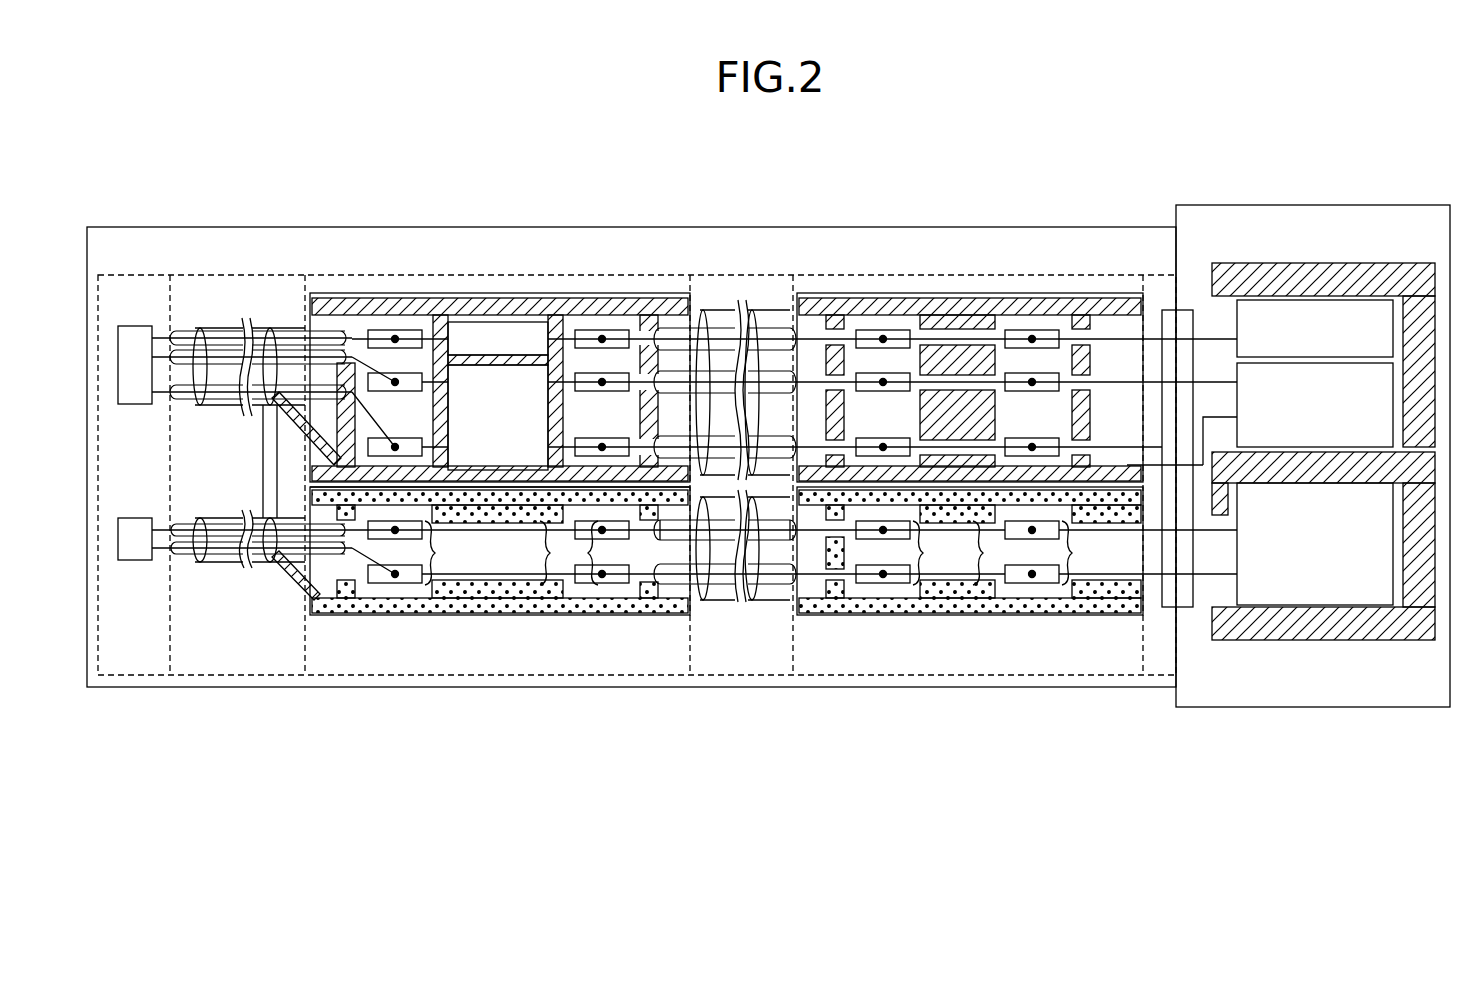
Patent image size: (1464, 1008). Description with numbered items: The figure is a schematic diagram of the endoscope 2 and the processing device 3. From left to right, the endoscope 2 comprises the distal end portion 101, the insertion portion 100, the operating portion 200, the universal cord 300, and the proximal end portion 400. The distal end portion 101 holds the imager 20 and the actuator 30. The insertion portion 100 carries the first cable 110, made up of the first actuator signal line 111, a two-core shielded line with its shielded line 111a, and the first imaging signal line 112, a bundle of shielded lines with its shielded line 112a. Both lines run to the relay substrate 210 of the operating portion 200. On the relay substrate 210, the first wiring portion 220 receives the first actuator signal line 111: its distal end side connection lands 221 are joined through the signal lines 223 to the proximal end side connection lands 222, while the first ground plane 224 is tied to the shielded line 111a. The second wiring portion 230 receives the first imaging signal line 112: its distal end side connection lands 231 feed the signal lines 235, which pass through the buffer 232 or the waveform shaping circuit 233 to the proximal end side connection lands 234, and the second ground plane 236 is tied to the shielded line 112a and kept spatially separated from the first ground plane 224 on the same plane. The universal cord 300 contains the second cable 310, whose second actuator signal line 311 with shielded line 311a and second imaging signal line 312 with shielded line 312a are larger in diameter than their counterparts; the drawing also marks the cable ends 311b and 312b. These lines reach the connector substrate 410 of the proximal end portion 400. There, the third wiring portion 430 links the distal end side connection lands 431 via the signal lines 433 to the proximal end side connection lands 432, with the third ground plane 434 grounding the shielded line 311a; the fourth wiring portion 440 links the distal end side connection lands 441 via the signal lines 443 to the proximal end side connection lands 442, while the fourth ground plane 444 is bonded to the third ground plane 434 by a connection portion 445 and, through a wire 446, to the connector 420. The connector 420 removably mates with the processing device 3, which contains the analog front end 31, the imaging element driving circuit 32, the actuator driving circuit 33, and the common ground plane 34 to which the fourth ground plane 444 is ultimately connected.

The endoscope 2 is at (958, 227).
The processing device 3 is at (1293, 205).
The imager 20 is at (138, 326).
The actuator 30 is at (138, 518).
The analog front end 31 is at (1254, 300).
The imaging element driving circuit 32 is at (1382, 363).
The actuator driving circuit 33 is at (1378, 605).
The common ground plane 34 is at (1295, 640).
The insertion portion 100 is at (232, 275).
The distal end portion 101 is at (140, 275).
The first cable 110 is at (272, 328).
The first actuator signal line 111 is at (216, 518).
The shielded line 111a is at (306, 582).
The first imaging signal line 112 is at (216, 326).
The shielded line 112a is at (305, 428).
The operating portion 200 is at (360, 275).
The relay substrate 210 is at (343, 625).
The first wiring portion 220 is at (428, 615).
The distal end side connection lands 221 is at (411, 553).
The proximal end side connection lands 222 is at (605, 553).
The signal lines 223 is at (511, 553).
The first ground plane 224 is at (398, 600).
The second wiring portion 230 is at (502, 293).
The distal end side connection lands 231 is at (392, 330).
The buffer 232 is at (522, 365).
The waveform shaping circuit 233 is at (486, 322).
The proximal end side connection lands 234 is at (596, 330).
The signal lines 235 is at (440, 330).
The second ground plane 236 is at (328, 303).
The universal cord 300 is at (745, 275).
The second cable 310 is at (764, 318).
The second actuator signal line 311 is at (705, 600).
The shielded line 311a is at (720, 600).
The actuator cable second portion 311b is at (762, 600).
The second imaging signal line 312 is at (718, 318).
The shielded line 312a is at (690, 560).
The actuator cable second end 312b is at (800, 560).
The proximal end portion 400 is at (1038, 275).
The connector substrate 410 is at (1112, 300).
The connector 420 is at (1184, 310).
The third wiring portion 430 is at (1108, 615).
The distal end side connection lands 431 is at (901, 553).
The proximal end side connection lands 432 is at (1121, 553).
The signal lines 433 is at (996, 553).
The third ground plane 434 is at (1050, 600).
The fourth wiring portion 440 is at (926, 302).
The distal end side connection lands 441 is at (884, 330).
The proximal end side connection lands 442 is at (1064, 330).
The signal lines 443 is at (996, 330).
The fourth ground plane 444 is at (838, 330).
The connection portion 445 is at (1130, 465).
The wire 446 is at (1200, 470).